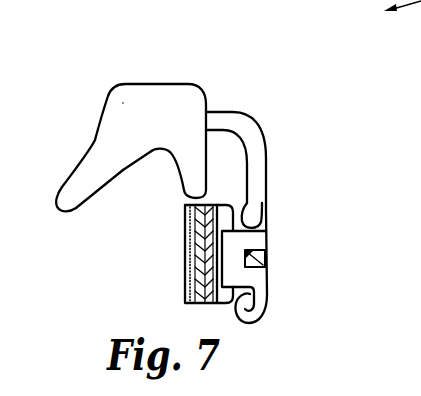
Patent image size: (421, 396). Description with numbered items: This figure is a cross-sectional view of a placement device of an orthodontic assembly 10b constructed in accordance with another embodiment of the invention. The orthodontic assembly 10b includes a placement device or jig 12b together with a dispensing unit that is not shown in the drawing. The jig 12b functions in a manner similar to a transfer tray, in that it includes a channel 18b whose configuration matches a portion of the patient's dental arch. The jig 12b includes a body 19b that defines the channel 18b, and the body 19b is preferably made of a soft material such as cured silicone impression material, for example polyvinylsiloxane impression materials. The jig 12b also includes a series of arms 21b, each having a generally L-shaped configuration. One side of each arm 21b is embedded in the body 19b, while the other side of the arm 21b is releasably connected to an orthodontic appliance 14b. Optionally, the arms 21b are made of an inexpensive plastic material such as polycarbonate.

The orthodontic assembly 10b is at (268, 78).
The placement device or jig 12b is at (268, 109).
The orthodontic appliance 14b is at (290, 299).
The channel 18b is at (110, 183).
The body 19b is at (165, 92).
The arm 21b is at (262, 147).